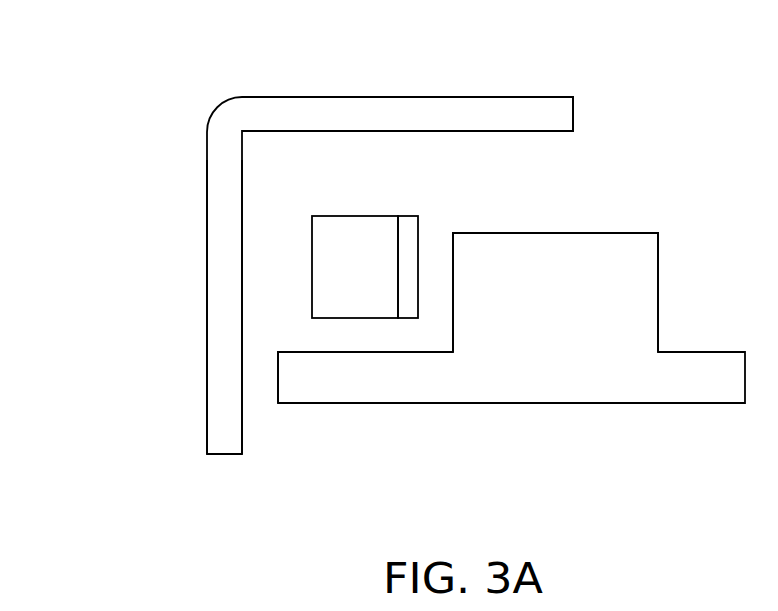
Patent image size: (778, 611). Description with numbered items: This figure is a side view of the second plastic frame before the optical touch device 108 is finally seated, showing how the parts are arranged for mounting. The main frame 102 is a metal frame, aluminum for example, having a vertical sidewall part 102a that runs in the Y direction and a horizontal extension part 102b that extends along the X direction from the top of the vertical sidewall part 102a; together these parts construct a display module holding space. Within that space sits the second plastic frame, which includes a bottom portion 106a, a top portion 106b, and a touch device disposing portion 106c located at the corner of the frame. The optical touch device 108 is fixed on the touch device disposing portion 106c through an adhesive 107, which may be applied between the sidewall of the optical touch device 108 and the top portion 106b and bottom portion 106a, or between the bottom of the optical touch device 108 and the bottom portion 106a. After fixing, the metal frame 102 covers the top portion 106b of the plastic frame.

The main frame 102 is at (100, 52).
The vertical sidewall part 102a is at (207, 185).
The horizontal extension part 102b is at (257, 97).
The bottom portion 106a is at (577, 378).
The top portion 106b is at (630, 233).
The touch device disposing portion 106c is at (297, 350).
The adhesive 107 is at (409, 230).
The optical touch device 108 is at (335, 233).